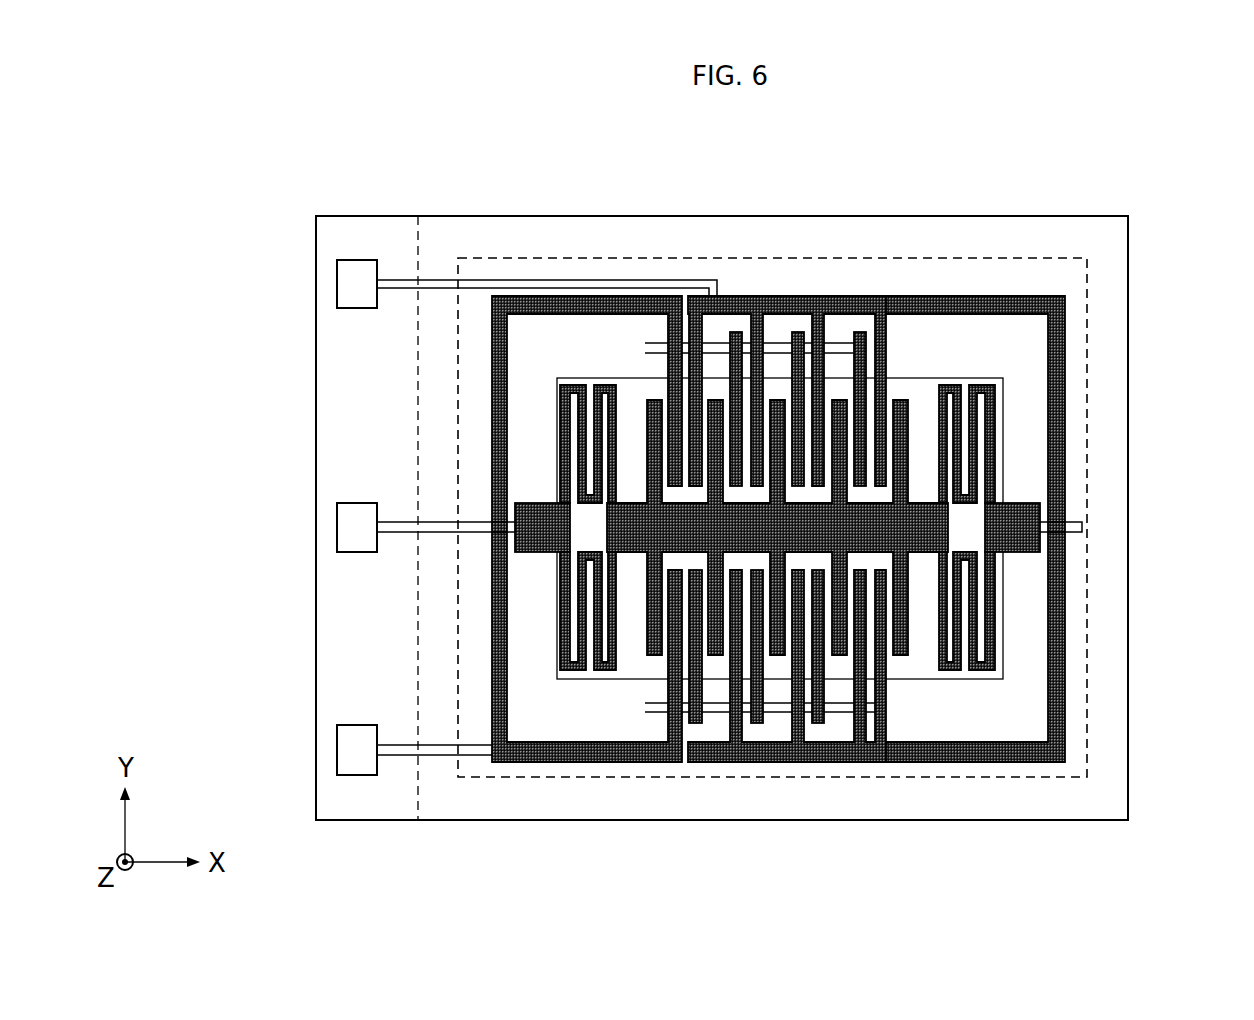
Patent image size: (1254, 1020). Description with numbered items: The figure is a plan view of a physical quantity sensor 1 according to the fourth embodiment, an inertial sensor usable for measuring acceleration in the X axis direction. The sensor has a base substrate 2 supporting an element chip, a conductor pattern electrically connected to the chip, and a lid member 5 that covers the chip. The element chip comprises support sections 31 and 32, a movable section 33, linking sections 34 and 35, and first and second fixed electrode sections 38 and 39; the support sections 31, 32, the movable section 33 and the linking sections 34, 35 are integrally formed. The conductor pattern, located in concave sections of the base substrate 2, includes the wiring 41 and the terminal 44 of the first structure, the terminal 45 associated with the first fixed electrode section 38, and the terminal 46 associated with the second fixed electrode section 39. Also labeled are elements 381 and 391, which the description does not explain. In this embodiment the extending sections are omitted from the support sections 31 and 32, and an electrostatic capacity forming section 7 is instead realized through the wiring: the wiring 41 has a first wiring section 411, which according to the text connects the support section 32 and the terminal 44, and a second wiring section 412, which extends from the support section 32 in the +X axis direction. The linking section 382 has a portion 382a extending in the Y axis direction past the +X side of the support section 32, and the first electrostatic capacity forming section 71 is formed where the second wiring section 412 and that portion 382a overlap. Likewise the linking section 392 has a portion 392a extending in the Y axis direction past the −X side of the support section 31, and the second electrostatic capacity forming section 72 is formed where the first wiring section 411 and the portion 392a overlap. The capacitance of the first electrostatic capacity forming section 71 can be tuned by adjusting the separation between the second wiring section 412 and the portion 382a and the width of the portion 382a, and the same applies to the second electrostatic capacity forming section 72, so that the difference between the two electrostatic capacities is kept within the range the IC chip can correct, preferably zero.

The physical quantity sensor 1 is at (1179, 210).
The base substrate 2 is at (1130, 742).
The lid member 5 is at (1112, 700).
The electrostatic capacity forming section 7 is at (717, 506).
The support section 31 is at (537, 538).
The support section 32 is at (1025, 538).
The movable section 33 is at (927, 540).
The linking section 34 is at (575, 385).
The linking section 35 is at (978, 385).
The first fixed electrode section 38 is at (935, 296).
The second fixed electrode section 39 is at (700, 752).
The wiring 41 is at (723, 479).
The terminal 44 is at (345, 530).
The terminal 45 is at (348, 285).
The terminal 46 is at (348, 750).
The first electrostatic capacity forming section 71 is at (1076, 507).
The second electrostatic capacity forming section 72 is at (485, 536).
The first fixed electrode finger 381 is at (757, 320).
The linking section 382 is at (992, 308).
The portion 382a is at (1057, 598).
The second fixed electrode finger 391 is at (735, 332).
The linking section 392 is at (555, 306).
The portion 392a is at (502, 647).
The first wiring section 411 is at (432, 525).
The second wiring section 412 is at (1082, 523).